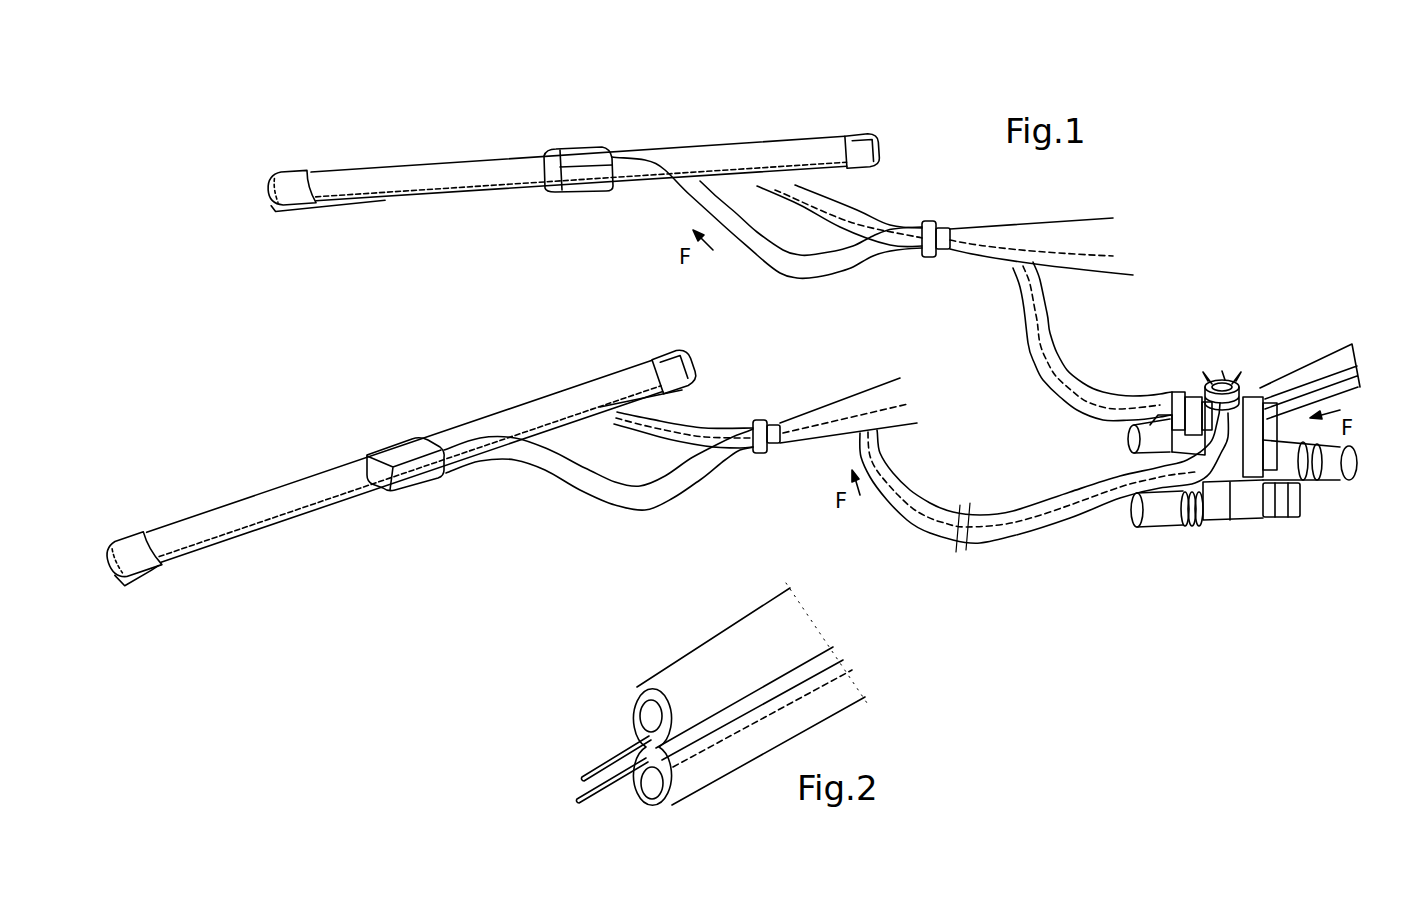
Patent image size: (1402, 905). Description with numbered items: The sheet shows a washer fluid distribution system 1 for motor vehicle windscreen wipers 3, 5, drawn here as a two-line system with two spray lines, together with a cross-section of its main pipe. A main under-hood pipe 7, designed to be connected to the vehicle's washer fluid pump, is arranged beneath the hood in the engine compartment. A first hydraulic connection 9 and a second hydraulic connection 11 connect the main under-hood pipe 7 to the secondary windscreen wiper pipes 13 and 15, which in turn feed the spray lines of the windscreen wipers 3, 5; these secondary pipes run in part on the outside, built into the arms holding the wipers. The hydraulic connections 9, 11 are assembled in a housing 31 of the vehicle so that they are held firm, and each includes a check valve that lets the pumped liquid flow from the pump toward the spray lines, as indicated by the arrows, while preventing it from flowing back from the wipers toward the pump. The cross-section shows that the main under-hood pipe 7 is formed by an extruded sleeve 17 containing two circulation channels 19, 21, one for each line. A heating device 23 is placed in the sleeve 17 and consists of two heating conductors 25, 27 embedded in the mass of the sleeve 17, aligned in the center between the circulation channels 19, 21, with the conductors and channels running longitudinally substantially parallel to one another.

In FIG. 1, the washer fluid distribution system 1 is at (1243, 228).
In FIG. 1, the windscreen wiper 3 is at (565, 132).
In FIG. 1, the windscreen wiper 5 is at (379, 423).
In FIG. 1, the main under-hood pipe 7 is at (1300, 362).
In FIG. 2, the main under-hood pipe 7 is at (612, 643).
In FIG. 1, the first hydraulic connection 9 is at (1223, 362).
In FIG. 1, the second hydraulic connection 11 is at (1213, 523).
In FIG. 1, the secondary windscreen wiper pipe 13 is at (800, 280).
In FIG. 1, the secondary windscreen wiper pipe 15 is at (623, 499).
In FIG. 2, the extruded sleeve 17 is at (740, 636).
In FIG. 2, the circulation channel 19 is at (637, 717).
In FIG. 2, the circulation channel 21 is at (650, 783).
In FIG. 2, the heating device 23 is at (522, 715).
In FIG. 2, the heating conductor 25 is at (590, 770).
In FIG. 2, the heating conductor 27 is at (580, 793).
In FIG. 1, the housing 31 is at (1297, 500).